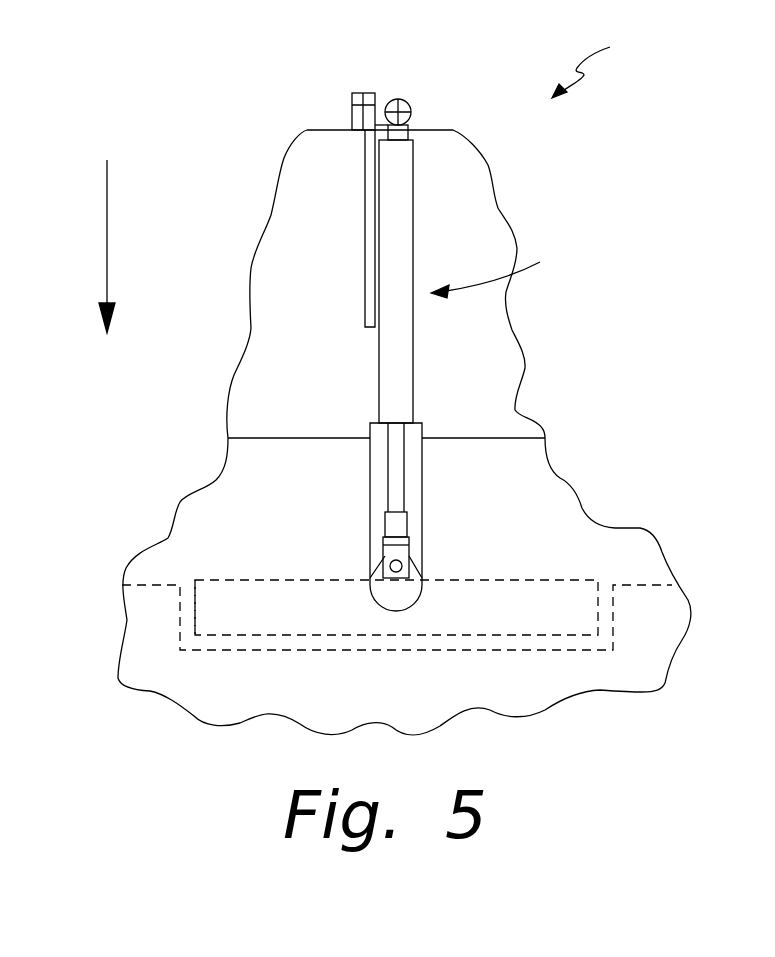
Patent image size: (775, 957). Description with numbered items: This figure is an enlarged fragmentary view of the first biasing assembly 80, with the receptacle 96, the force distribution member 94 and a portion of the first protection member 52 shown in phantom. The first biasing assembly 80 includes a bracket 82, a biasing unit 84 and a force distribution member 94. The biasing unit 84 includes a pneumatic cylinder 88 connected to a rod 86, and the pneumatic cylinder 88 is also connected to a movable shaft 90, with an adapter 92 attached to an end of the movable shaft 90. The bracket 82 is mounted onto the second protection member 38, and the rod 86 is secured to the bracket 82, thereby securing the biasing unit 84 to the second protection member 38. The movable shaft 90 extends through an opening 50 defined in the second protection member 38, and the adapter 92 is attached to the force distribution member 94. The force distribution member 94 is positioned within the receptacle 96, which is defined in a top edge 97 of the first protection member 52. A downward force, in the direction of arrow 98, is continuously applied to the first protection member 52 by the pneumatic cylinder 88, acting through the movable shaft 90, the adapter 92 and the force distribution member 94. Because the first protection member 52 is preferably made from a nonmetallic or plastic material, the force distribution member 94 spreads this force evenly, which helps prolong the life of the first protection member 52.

The first biasing assembly 80 is at (596, 60).
The rod 86 is at (408, 132).
The bracket 82 is at (370, 165).
The pneumatic cylinder 88 is at (400, 208).
The biasing unit 84 is at (501, 267).
The arrow 98 is at (108, 232).
The second protection member 38 is at (273, 362).
The force distribution member 94 is at (240, 608).
The adapter 92 is at (392, 522).
The movable shaft 90 is at (404, 478).
The opening 50 is at (418, 516).
The top edge 97 is at (640, 585).
The first protection member 52 is at (645, 652).
The receptacle 96 is at (200, 643).